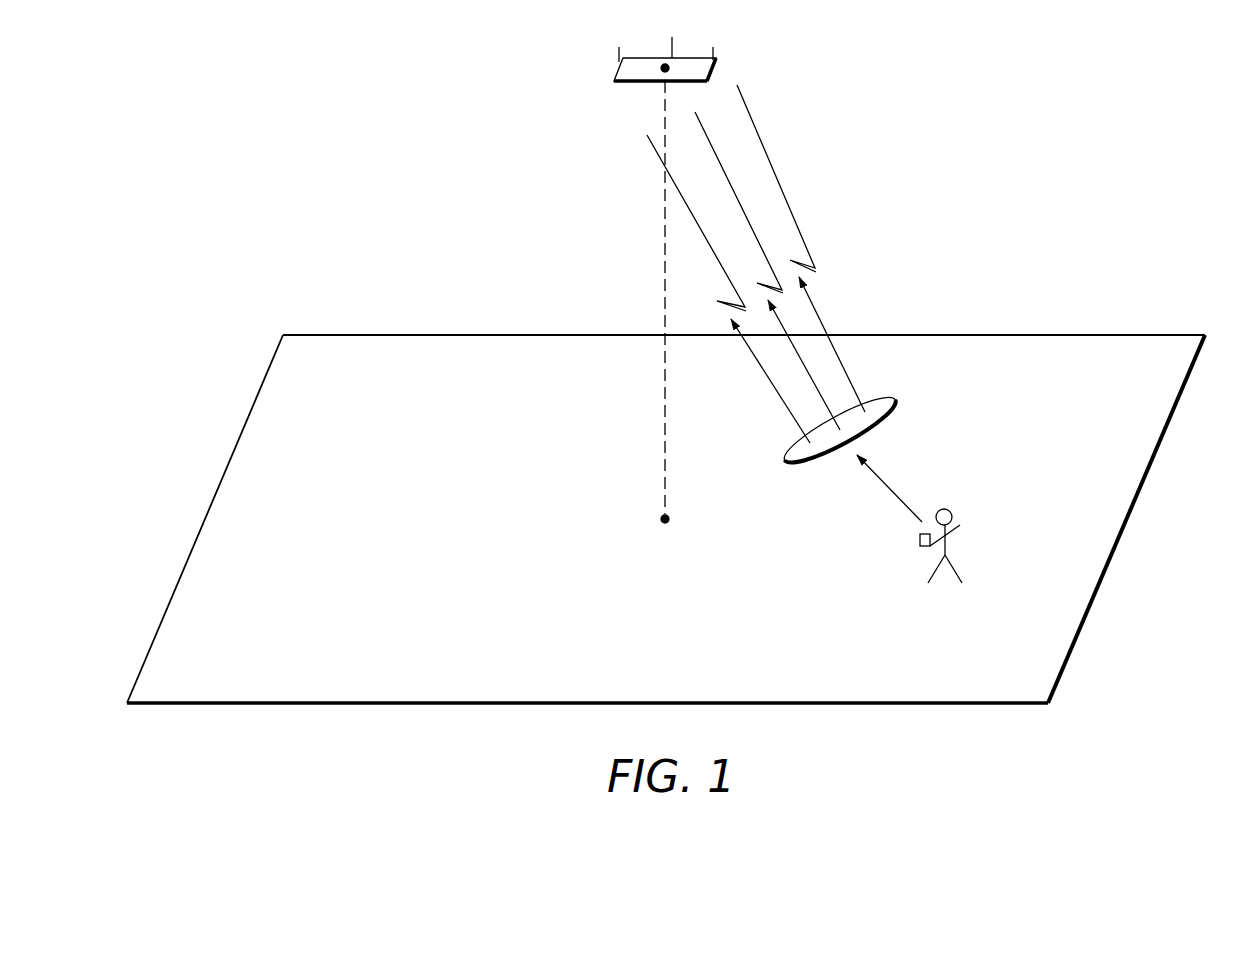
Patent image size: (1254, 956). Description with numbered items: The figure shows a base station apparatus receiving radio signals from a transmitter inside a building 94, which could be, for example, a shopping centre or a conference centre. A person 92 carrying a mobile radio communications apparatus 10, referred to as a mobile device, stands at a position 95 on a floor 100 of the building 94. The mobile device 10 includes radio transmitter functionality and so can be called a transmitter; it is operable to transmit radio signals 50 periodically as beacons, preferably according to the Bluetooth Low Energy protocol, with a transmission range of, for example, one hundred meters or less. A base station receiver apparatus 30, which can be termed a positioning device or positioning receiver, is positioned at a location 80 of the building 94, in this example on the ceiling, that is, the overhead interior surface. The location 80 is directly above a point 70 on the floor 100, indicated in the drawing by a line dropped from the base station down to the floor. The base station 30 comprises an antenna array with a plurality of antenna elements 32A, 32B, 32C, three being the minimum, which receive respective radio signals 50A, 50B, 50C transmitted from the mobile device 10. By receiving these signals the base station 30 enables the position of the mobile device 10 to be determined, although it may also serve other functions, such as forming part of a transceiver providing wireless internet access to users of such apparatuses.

The mobile radio communications apparatus 10 is at (919, 540).
The base station receiver apparatus 30 is at (614, 92).
The antenna element 32A is at (618, 52).
The antenna element 32B is at (671, 42).
The antenna element 32C is at (714, 52).
The radio signals 50 is at (893, 403).
The radio signal 50A is at (659, 157).
The radio signal 50B is at (809, 375).
The radio signal 50C is at (777, 178).
The point on the floor 70 is at (660, 519).
The location 80 is at (666, 65).
The person 92 is at (1005, 485).
The building 94 is at (1152, 232).
The position 95 is at (957, 531).
The floor 100 is at (473, 703).